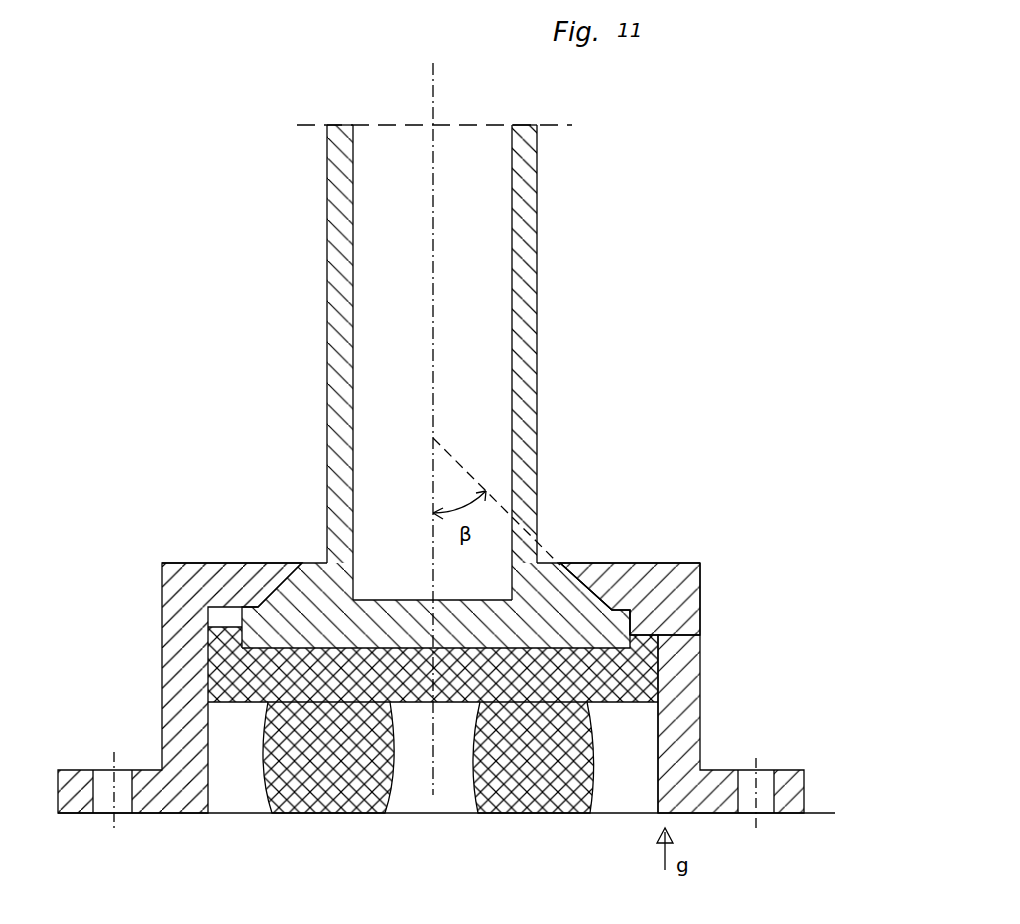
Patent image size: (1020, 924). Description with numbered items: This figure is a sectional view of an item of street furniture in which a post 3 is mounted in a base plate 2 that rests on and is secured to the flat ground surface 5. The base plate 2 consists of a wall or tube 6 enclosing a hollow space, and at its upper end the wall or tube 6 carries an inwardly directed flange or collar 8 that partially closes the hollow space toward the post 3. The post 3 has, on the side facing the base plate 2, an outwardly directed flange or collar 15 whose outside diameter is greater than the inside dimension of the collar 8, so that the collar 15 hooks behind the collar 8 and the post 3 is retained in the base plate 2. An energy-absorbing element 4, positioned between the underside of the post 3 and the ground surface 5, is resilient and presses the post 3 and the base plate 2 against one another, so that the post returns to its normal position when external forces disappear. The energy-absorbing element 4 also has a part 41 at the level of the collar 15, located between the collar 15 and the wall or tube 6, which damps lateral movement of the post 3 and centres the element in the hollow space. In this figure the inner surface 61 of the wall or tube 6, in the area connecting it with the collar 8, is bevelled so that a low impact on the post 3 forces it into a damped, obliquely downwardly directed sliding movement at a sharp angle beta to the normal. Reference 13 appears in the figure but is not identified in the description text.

The base plate 2 is at (710, 685).
The post 3 is at (528, 160).
The energy-absorbing element 4 is at (547, 767).
The ground surface 5 is at (446, 830).
The wall or tube 6 is at (680, 659).
The inwardly directed flange or collar 8 is at (641, 576).
The longitudinal axis 13 is at (433, 308).
The outwardly directed flange or collar 15 is at (657, 533).
The part of the energy-absorbing element 41 is at (700, 634).
The inner surface 61 is at (660, 613).